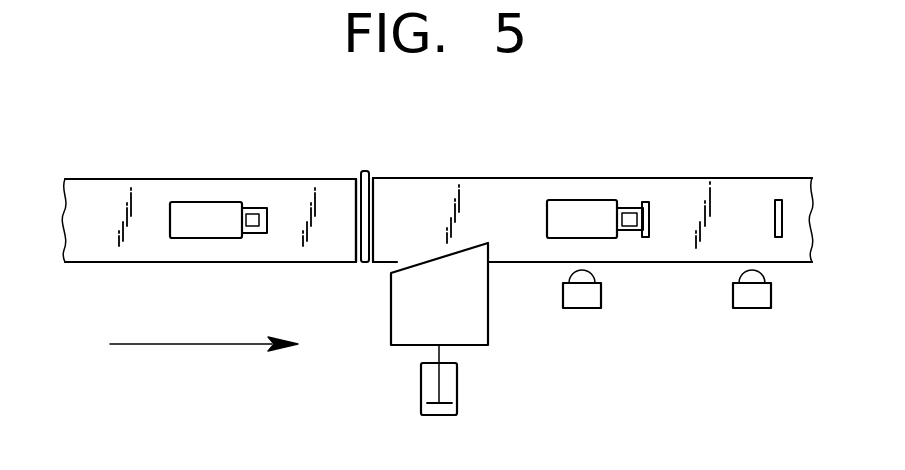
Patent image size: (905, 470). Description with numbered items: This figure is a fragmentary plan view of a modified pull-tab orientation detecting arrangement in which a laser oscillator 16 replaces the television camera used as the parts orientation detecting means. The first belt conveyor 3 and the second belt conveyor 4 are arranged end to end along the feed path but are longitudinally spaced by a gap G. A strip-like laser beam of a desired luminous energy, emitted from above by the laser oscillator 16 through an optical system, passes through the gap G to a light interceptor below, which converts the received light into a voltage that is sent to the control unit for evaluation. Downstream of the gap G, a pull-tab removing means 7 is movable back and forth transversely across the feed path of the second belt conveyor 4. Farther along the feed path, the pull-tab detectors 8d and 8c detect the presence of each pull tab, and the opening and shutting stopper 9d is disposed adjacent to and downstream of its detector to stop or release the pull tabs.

The first belt conveyor 3 is at (205, 262).
The second belt conveyor 4 is at (663, 262).
The pull-tab removing means 7 is at (458, 383).
The third pull-tab detector 8c is at (752, 308).
The fourth pull-tab detector 8d is at (582, 308).
The fourth opening and shutting stopper 9d is at (652, 207).
The laser oscillator 16 is at (368, 171).
The gap G is at (361, 171).